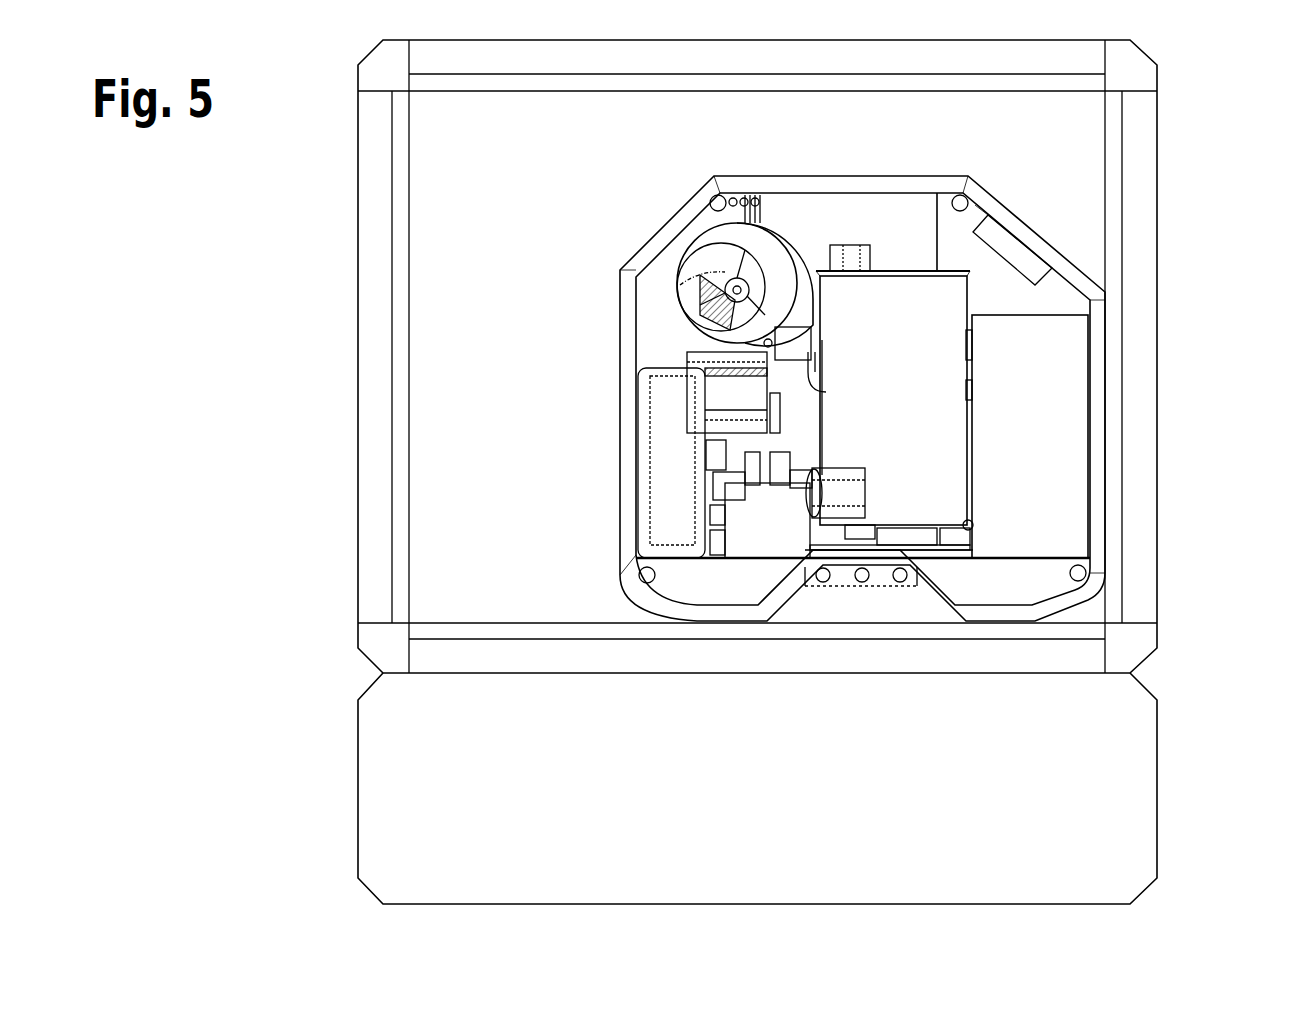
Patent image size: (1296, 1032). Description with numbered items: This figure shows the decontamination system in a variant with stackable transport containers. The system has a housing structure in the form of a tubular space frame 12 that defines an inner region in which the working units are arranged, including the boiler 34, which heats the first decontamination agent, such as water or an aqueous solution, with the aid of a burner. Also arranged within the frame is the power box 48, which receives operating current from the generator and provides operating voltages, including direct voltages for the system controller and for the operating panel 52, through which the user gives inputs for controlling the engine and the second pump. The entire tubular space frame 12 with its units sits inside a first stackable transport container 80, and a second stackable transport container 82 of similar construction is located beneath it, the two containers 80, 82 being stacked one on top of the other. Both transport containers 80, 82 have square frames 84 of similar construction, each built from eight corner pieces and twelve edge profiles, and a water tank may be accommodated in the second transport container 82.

The tubular space frame 12 is at (628, 353).
The boiler 34 is at (905, 397).
The power box 48 is at (1043, 450).
The operating panel 52 is at (1028, 220).
The first stackable transport container 80 is at (1168, 222).
The second stackable transport container 82 is at (1168, 758).
The square frame 84 is at (402, 258).